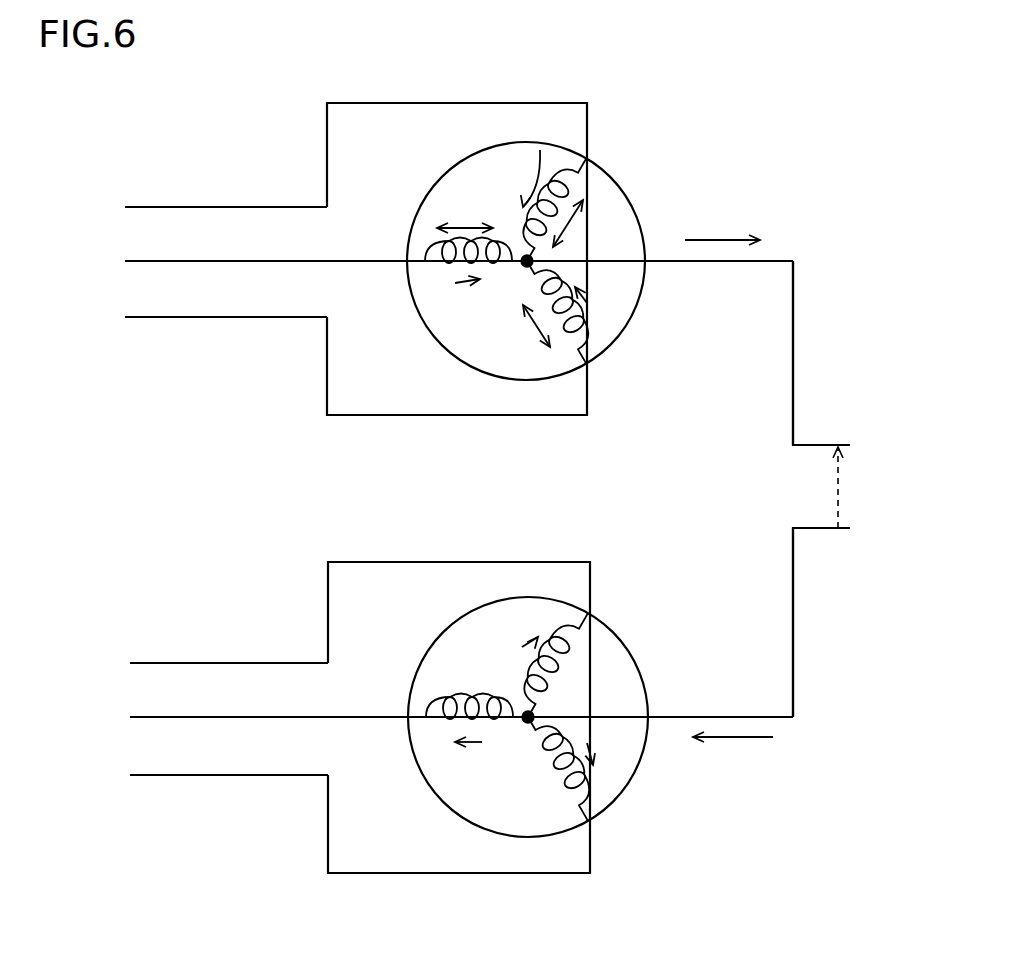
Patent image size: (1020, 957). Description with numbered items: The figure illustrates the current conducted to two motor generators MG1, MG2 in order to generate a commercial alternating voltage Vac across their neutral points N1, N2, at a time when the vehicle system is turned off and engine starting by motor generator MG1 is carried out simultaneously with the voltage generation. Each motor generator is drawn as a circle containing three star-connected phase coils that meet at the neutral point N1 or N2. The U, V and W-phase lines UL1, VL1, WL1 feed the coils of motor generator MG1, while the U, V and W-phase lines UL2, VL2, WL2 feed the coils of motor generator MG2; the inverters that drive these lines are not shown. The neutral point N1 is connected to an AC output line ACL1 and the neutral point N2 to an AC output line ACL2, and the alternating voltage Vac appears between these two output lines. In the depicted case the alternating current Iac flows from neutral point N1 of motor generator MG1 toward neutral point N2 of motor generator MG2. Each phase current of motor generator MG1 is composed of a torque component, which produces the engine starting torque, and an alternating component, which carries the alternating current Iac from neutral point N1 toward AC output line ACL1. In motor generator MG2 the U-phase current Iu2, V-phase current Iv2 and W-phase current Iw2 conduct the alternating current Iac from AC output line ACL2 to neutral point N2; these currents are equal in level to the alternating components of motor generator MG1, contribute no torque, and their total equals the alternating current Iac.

The motor generator MG1 is at (423, 200).
The motor generator MG2 is at (423, 660).
The U-phase line UL1 is at (192, 206).
The V-phase line VL1 is at (192, 260).
The W-phase line WL1 is at (192, 316).
The U-phase line UL2 is at (194, 662).
The V-phase line VL2 is at (194, 716).
The W-phase line WL2 is at (194, 774).
The AC output line ACL1 is at (793, 324).
The AC output line ACL2 is at (793, 594).
The neutral point N1 is at (527, 262).
The neutral point N2 is at (527, 720).
The alternating current Iac is at (729, 490).
The commercial alternating voltage Vac is at (864, 487).
The U-phase current Iu2 is at (481, 743).
The V-phase current Iv2 is at (522, 647).
The W-phase current Iw2 is at (589, 748).